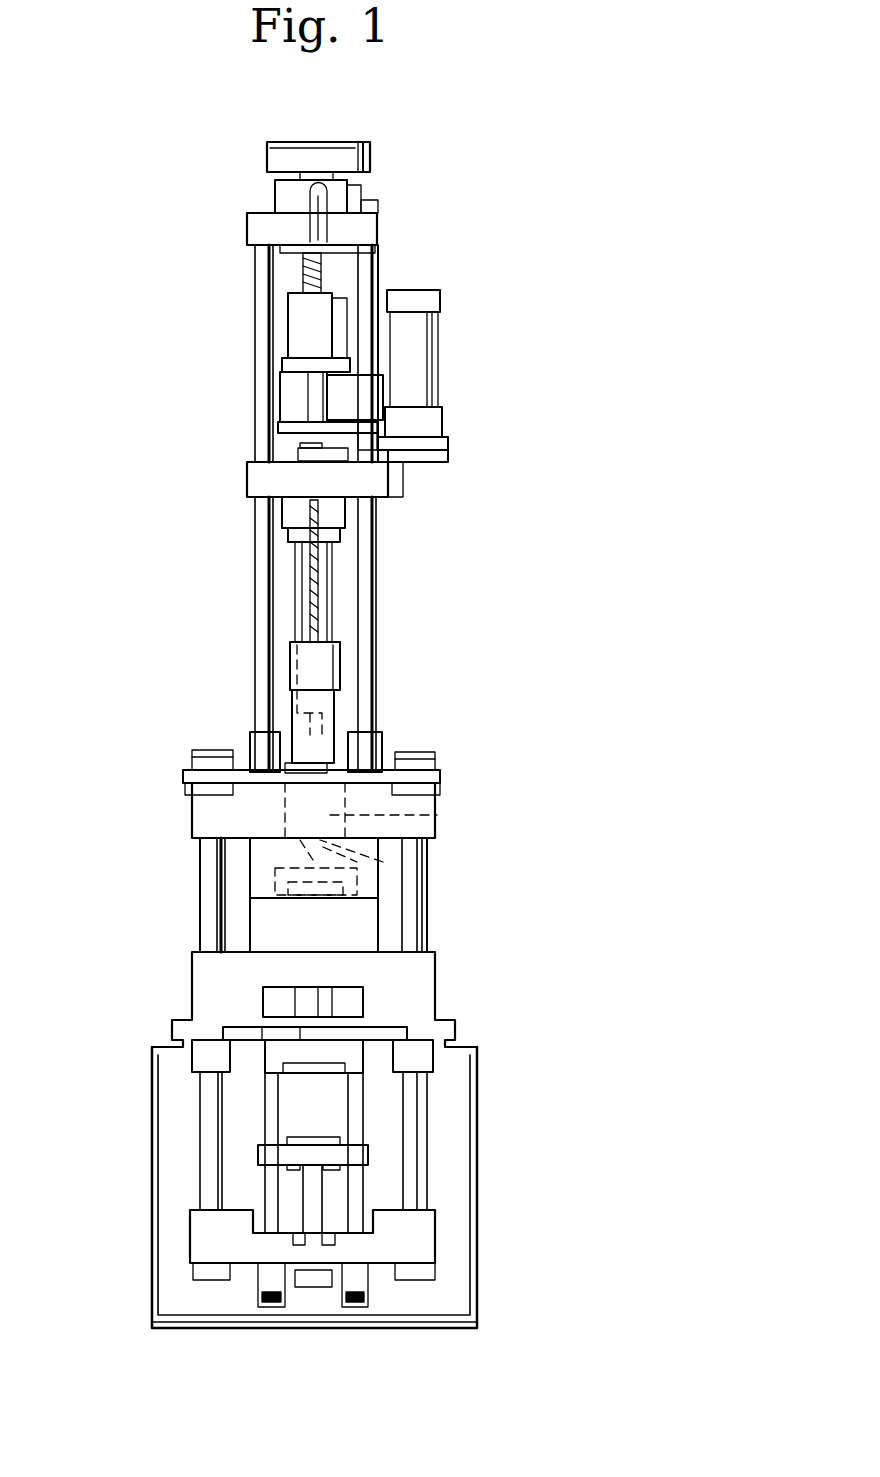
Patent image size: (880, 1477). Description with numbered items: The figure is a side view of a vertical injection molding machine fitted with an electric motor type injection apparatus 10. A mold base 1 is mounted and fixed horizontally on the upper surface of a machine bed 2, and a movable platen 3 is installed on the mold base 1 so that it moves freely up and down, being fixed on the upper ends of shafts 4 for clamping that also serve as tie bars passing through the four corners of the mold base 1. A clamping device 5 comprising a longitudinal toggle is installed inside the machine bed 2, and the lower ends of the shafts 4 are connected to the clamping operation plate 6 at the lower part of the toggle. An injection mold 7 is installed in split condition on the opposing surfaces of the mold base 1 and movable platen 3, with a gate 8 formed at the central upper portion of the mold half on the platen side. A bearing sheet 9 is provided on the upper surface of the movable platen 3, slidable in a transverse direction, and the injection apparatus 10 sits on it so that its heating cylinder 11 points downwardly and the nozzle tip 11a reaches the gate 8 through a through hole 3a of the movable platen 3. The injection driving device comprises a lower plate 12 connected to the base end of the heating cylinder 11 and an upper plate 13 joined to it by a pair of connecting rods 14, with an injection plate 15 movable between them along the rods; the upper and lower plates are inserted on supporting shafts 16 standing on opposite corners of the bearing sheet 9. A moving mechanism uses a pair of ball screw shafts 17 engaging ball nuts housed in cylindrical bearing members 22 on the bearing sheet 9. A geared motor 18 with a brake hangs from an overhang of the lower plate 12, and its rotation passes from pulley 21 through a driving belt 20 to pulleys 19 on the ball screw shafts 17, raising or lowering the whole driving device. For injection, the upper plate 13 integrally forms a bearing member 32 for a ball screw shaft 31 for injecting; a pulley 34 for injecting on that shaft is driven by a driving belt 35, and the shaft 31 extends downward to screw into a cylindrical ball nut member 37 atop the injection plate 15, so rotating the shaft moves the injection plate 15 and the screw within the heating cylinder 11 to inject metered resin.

The mold base 1 is at (225, 972).
The machine bed 2 is at (158, 1147).
The movable platen 3 is at (220, 820).
The through hole 3a is at (420, 815).
The shafts for clamping 4 is at (205, 877).
The clamping device 5 is at (383, 1152).
The clamping operation plate 6 is at (403, 1235).
The injection mold 7 is at (358, 930).
The gate 8 is at (383, 863).
The bearing sheet 9 is at (362, 772).
The injection apparatus 10 is at (250, 523).
The heating cylinder 11 is at (330, 610).
The nozzle tip 11a is at (300, 728).
The lower plate 12 is at (265, 478).
The upper plate 13 is at (263, 228).
The connecting rods 14 is at (367, 273).
The injection plate 15 is at (378, 393).
The supporting shafts 16 is at (265, 367).
The ball screw shafts for moving 17 is at (318, 568).
The geared motor 18 is at (437, 342).
The pulleys 19 is at (307, 443).
The driving belt 20 is at (415, 468).
The pulley 21 is at (437, 465).
The bearing members 22 is at (290, 673).
The ball screw shaft for injecting 31 is at (302, 270).
The bearing member 32 is at (358, 193).
The pulley for injecting 34 is at (347, 142).
The driving belt 35 is at (372, 157).
The cylindrical ball nut member 37 is at (302, 323).